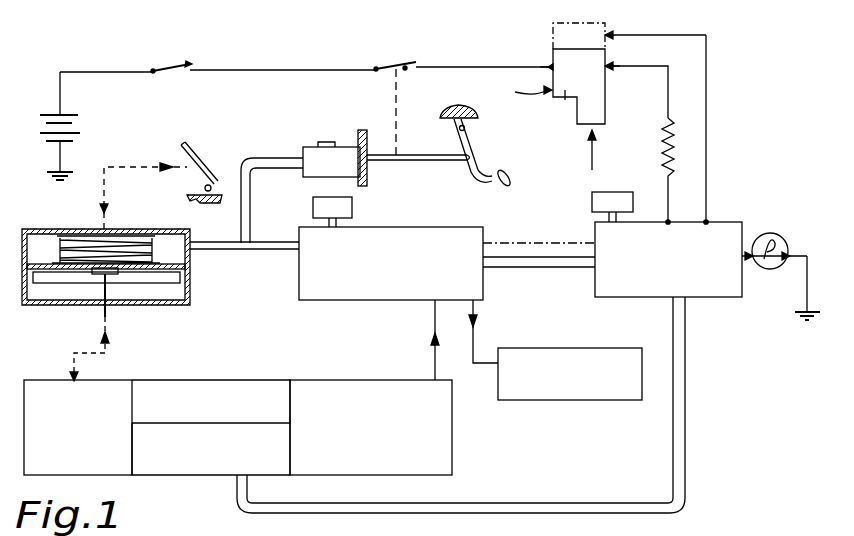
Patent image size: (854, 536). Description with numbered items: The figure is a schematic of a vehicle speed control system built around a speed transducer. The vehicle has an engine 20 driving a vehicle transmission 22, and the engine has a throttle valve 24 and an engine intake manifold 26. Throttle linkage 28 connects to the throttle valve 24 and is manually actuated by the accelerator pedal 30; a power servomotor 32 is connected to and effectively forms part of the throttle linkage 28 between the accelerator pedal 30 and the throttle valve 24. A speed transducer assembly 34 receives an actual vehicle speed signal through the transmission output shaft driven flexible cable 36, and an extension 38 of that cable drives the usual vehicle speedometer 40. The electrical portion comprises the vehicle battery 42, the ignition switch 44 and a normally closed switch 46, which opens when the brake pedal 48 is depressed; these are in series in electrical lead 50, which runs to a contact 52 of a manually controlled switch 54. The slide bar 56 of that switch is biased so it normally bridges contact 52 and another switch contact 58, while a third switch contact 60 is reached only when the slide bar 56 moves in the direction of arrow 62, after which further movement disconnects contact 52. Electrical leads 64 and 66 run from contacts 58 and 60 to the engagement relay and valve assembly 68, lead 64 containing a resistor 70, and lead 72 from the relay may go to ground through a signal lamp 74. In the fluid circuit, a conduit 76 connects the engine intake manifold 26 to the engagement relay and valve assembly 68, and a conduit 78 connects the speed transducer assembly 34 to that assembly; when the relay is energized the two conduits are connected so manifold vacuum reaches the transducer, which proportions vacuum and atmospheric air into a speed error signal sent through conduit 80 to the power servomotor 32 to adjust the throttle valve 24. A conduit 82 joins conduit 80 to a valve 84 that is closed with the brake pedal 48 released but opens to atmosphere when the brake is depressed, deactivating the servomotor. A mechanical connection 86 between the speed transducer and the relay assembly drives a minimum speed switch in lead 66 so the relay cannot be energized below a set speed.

The engine 20 is at (222, 380).
The vehicle transmission 22 is at (318, 380).
The throttle valve 24 is at (39, 382).
The engine intake manifold 26 is at (220, 478).
The throttle linkage 28 is at (108, 318).
The accelerator pedal 30 is at (192, 151).
The power servomotor 32 is at (44, 224).
The speed transducer assembly 34 is at (358, 300).
The flexible cable 36 is at (433, 345).
The extension of the flexible cable 38 is at (475, 342).
The vehicle speedometer 40 is at (602, 400).
The vehicle battery 42 is at (43, 127).
The ignition switch 44 is at (175, 70).
The normally closed switch 46 is at (385, 63).
The brake pedal 48 is at (512, 183).
The electrical lead 50 is at (457, 68).
The switch contact 52 is at (549, 66).
The manually controlled switch 54 is at (520, 89).
The slide bar 56 is at (566, 92).
The switch contact 58 is at (608, 68).
The third switch contact 60 is at (612, 33).
The arrow 62 is at (596, 158).
The electrical lead 64 is at (650, 66).
The electrical lead 66 is at (690, 33).
The engagement relay and valve assembly 68 is at (728, 222).
The resistor 70 is at (673, 147).
The lead 72 is at (806, 275).
The signal lamp 74 is at (775, 235).
The conduit 76 is at (540, 503).
The conduit 78 is at (545, 268).
The conduit 80 is at (276, 250).
The conduit 82 is at (265, 160).
The valve 84 is at (310, 147).
The mechanical connection 86 is at (520, 242).